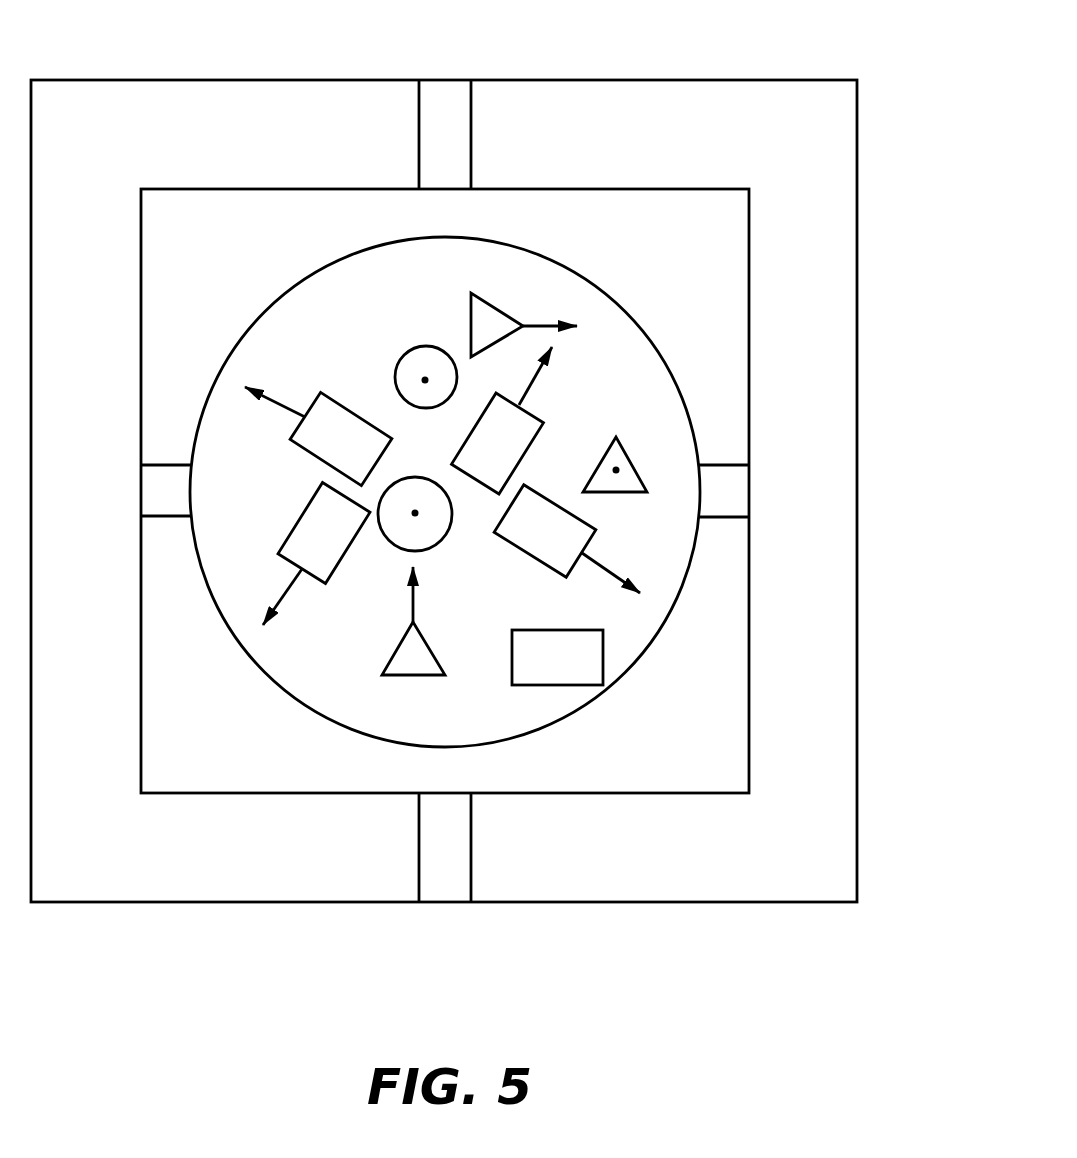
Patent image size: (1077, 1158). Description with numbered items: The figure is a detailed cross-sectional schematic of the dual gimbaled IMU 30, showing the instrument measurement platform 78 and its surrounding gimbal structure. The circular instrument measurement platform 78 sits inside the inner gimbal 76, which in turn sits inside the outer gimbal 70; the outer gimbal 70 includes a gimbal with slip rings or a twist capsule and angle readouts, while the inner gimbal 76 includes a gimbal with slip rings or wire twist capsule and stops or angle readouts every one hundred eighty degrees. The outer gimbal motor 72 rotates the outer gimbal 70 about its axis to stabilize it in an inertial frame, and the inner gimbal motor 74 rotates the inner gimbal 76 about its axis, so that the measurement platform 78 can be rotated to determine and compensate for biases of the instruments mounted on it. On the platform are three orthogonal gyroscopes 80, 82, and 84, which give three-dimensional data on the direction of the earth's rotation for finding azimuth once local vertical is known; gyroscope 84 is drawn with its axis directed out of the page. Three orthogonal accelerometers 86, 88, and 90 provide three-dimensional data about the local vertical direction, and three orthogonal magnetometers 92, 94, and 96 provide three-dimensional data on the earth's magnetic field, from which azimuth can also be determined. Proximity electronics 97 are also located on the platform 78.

The IMU 30 is at (729, 26).
The outer gimbal 70 is at (418, 148).
The outer gimbal motor 72 is at (472, 857).
The inner gimbal motor 74 is at (724, 465).
The inner gimbal 76 is at (165, 465).
The instrument measurement platform 78 is at (289, 287).
The gyroscope 80 is at (345, 402).
The gyroscope 82 is at (538, 417).
The gyroscope 84 is at (387, 538).
The accelerometer 86 is at (303, 498).
The accelerometer 88 is at (512, 546).
The accelerometer 90 is at (401, 352).
The magnetometer 92 is at (427, 676).
The magnetometer 94 is at (470, 316).
The magnetometer 96 is at (636, 472).
The proximity electronics 97 is at (573, 686).